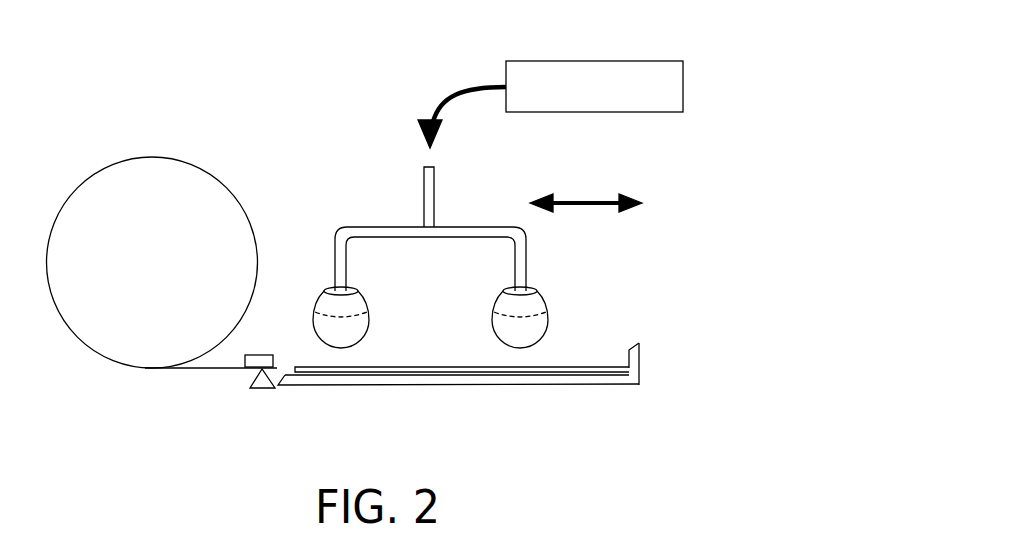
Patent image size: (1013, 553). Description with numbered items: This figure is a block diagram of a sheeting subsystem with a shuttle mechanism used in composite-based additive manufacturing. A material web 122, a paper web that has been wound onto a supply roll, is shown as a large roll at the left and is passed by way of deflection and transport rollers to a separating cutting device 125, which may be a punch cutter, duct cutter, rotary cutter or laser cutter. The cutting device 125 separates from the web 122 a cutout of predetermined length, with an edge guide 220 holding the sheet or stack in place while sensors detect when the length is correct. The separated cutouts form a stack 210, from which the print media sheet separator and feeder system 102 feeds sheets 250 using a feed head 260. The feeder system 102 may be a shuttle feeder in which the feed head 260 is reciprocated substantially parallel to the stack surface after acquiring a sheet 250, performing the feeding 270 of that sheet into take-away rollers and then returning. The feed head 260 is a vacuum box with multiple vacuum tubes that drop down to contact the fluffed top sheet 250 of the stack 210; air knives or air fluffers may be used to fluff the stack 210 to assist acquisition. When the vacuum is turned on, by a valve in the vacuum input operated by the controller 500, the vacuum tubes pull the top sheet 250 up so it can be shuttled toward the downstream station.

The print media sheet separator and feeder system 102 is at (302, 56).
The material web 122 is at (152, 157).
The separating cutting device 125 is at (263, 390).
The stack 210 is at (453, 388).
The edge guide 220 is at (641, 363).
The sheet 250 is at (589, 366).
The feed head 260 is at (424, 200).
The feeding 270 is at (587, 199).
The controller 500 is at (594, 61).